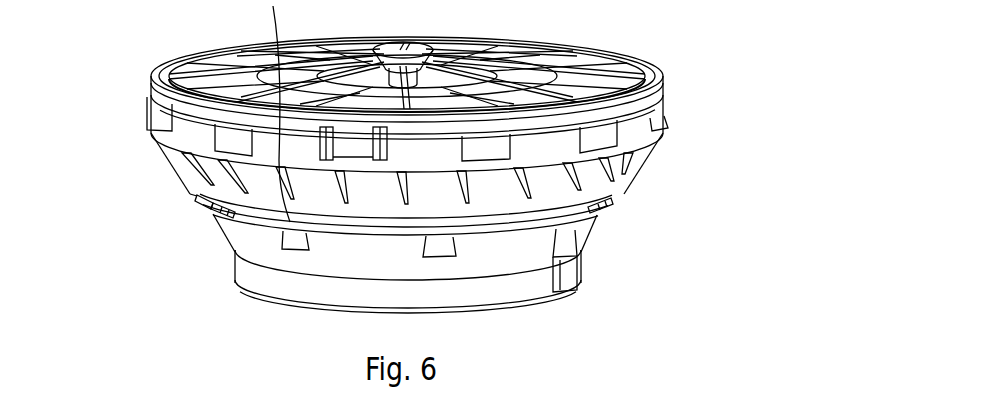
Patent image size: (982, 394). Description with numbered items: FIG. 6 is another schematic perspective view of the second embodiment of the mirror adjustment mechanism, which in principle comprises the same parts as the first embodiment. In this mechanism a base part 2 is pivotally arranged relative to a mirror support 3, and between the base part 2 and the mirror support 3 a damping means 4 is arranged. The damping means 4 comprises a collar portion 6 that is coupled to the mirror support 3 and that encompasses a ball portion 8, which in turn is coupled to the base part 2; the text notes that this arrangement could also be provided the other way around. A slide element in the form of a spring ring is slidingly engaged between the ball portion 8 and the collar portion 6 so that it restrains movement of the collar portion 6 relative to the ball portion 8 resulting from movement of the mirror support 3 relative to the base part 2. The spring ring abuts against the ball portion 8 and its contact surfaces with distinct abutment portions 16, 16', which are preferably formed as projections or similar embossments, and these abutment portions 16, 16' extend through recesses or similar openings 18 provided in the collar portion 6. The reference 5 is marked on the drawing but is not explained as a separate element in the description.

The base part 2 is at (243, 265).
The mirror support 3 is at (153, 85).
The damping means 4 is at (177, 210).
The device 5 is at (684, 0).
The collar portion 6 is at (187, 170).
The ball portion 8 is at (337, 248).
The abutment portion 16 is at (319, 211).
The abutment portion 16' is at (670, 168).
The opening 18 is at (213, 213).